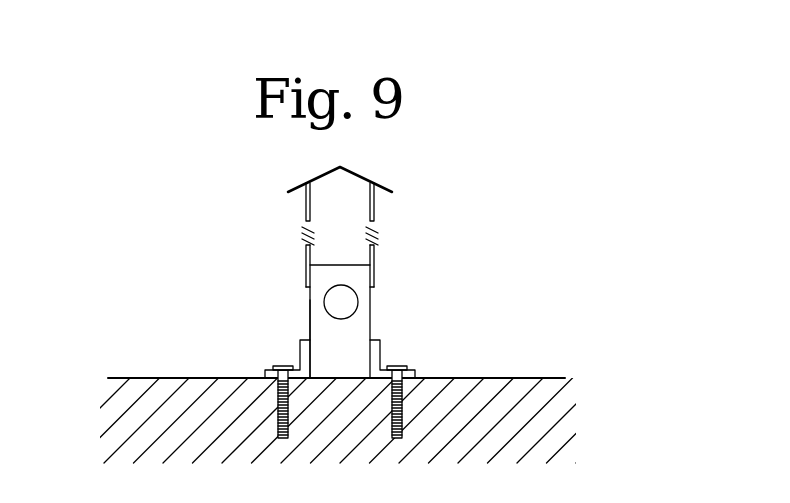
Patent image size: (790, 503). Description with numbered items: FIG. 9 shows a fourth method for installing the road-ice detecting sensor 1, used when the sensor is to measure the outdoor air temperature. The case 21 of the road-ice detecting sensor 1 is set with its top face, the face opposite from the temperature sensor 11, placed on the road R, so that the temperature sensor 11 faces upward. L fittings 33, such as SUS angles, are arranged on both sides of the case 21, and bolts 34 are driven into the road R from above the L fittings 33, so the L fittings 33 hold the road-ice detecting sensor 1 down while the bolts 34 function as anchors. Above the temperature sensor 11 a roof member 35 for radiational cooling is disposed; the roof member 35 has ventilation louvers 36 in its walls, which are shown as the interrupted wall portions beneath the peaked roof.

The road-ice detecting sensor 1 is at (371, 295).
The temperature sensor 11 is at (353, 265).
The case 21 is at (310, 315).
The L fittings 33 is at (445, 303).
The bolts 34 is at (448, 327).
The roof member 35 is at (288, 191).
The ventilation louvers 36 is at (418, 170).
The road R is at (133, 377).